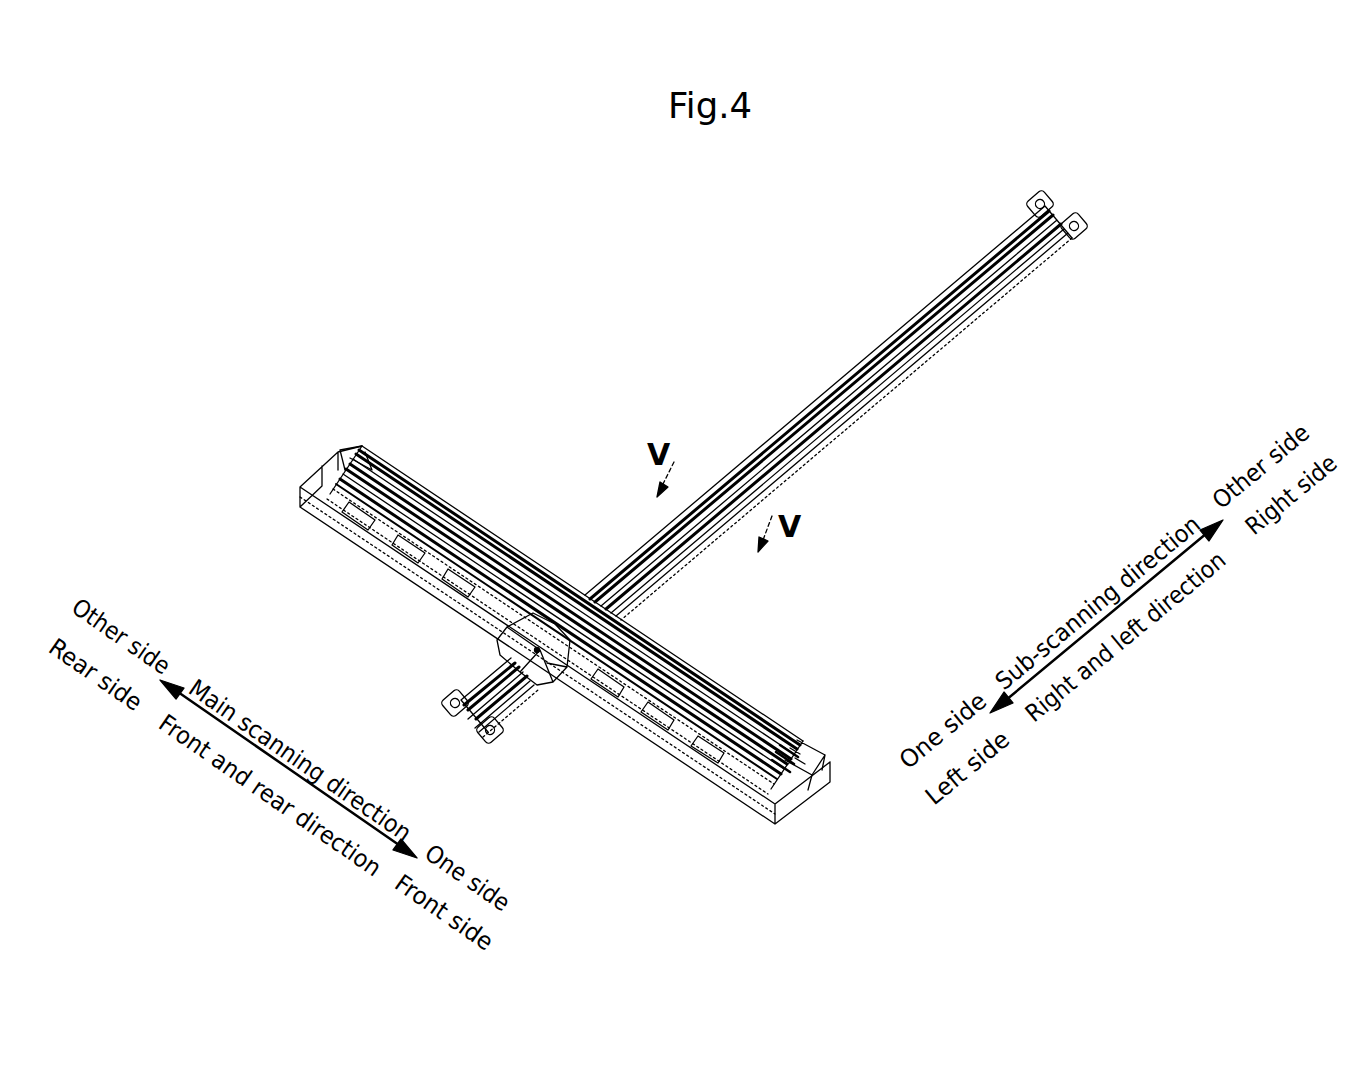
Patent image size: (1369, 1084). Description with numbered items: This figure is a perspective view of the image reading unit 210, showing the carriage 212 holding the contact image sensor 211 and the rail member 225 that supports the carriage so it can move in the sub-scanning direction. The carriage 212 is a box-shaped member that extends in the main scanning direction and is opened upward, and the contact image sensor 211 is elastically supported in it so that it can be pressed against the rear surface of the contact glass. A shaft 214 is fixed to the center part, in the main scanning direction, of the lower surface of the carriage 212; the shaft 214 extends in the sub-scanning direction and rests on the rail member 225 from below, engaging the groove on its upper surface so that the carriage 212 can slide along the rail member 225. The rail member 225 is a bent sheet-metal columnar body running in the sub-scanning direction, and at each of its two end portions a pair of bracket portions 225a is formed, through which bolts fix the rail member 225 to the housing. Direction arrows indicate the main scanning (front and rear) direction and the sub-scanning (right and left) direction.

The image reading unit 210 is at (343, 447).
The contact image sensor 211 is at (767, 733).
The carriage 212 is at (790, 803).
The shaft 214 is at (530, 668).
The rail member 225 is at (797, 415).
The bracket portions 225a is at (1062, 225).